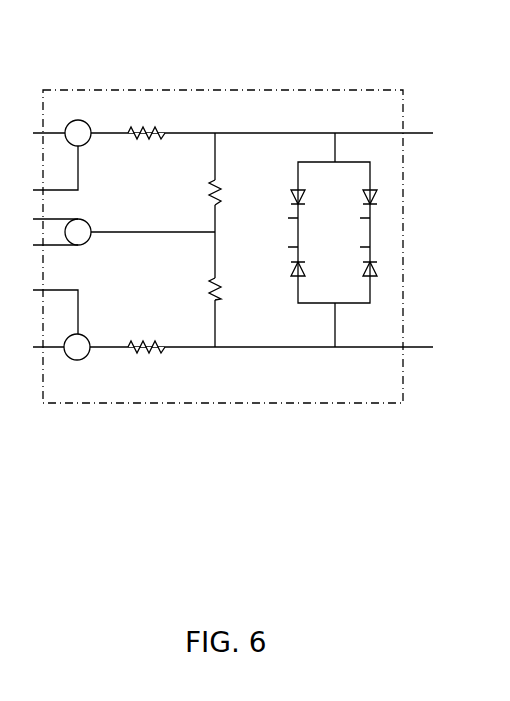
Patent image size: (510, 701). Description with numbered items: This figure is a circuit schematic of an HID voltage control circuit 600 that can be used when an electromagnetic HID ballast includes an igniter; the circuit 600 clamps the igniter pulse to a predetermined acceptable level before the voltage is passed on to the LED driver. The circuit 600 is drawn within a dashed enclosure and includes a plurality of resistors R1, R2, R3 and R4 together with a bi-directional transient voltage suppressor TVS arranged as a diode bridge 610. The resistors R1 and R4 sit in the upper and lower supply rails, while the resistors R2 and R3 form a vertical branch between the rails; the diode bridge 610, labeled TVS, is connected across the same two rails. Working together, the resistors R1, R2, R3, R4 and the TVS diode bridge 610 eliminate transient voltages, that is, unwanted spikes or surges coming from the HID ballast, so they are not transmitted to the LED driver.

The HID voltage control circuit 600 is at (97, 103).
The bi-directional transient voltage suppressor (TVS) diode bridge 610 is at (380, 219).
The resistor R1 is at (146, 120).
The resistor R2 is at (228, 192).
The resistor R3 is at (230, 289).
The resistor R4 is at (146, 335).
The transient voltage suppressor TVS is at (332, 240).